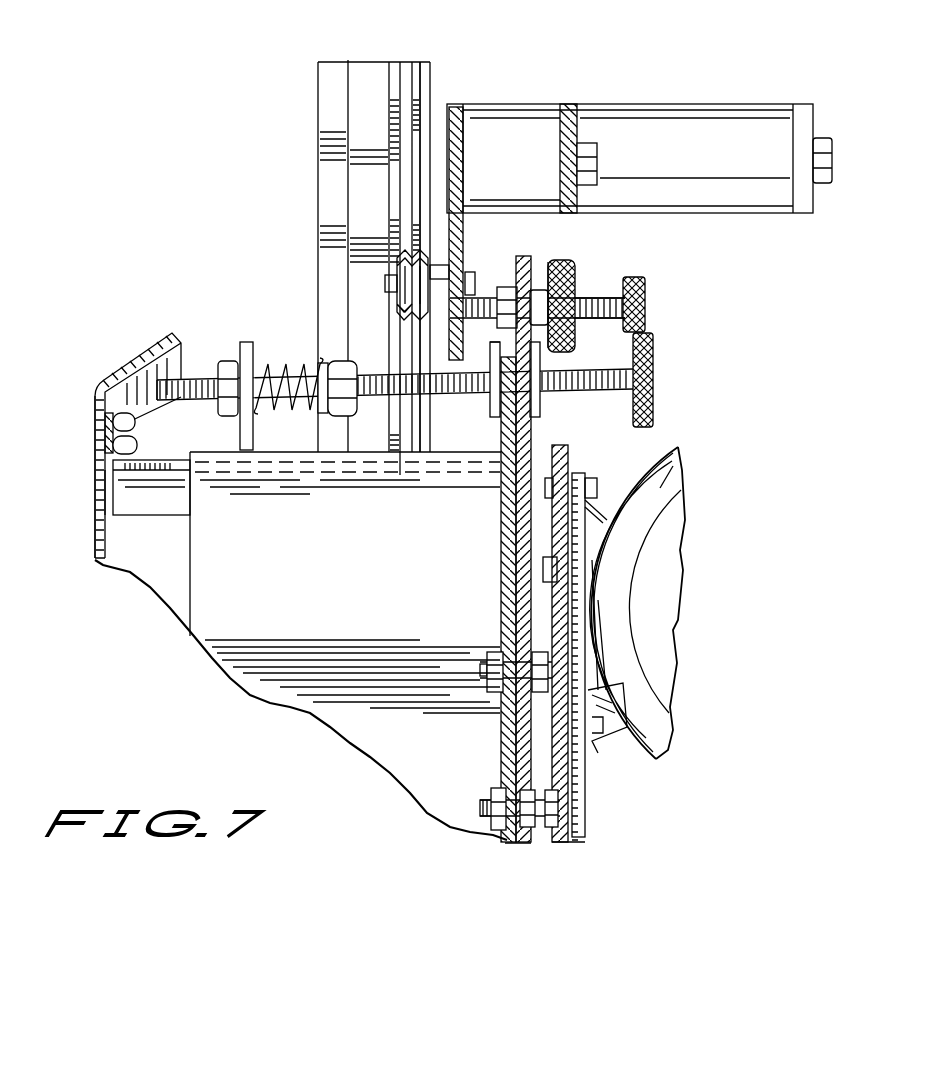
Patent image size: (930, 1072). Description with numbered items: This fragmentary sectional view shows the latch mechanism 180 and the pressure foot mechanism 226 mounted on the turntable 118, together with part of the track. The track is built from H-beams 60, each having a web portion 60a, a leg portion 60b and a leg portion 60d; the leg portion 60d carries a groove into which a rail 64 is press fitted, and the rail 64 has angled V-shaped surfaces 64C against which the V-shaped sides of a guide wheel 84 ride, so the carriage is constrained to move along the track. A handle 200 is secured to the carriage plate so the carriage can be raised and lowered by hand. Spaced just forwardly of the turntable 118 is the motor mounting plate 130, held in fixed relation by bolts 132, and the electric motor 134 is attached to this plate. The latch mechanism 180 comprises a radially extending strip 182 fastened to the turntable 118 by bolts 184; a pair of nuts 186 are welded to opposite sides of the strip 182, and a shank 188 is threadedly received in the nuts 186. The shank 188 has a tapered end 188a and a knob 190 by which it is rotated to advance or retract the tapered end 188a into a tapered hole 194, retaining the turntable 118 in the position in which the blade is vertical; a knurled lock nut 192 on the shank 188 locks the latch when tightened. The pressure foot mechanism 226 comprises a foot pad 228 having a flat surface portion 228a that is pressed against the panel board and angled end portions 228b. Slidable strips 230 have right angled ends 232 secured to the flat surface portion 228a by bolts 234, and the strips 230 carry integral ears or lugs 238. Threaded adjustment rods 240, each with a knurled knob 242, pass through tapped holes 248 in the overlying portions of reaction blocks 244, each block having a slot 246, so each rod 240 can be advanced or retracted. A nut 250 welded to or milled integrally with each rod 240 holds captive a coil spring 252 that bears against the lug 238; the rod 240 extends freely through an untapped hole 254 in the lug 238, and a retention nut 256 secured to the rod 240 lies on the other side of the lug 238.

The H-beam 60 is at (300, 108).
The web portion 60a is at (362, 97).
The leg portion 60b is at (333, 180).
The leg portion 60d is at (417, 210).
The angled V-shaped surfaces 64C is at (417, 87).
The guide wheel 84 is at (395, 262).
The handle 200 is at (700, 122).
The tapered end 188a is at (465, 298).
The tapered hole 194 is at (482, 294).
The nut 186 is at (560, 268).
The knurled lock nut 192 is at (577, 275).
The shank 188 is at (635, 280).
The latch mechanism 180 is at (668, 283).
The knob 190 is at (653, 318).
The knurled knob 242 is at (655, 372).
The reaction block 244 is at (540, 370).
The radially extending strip 182 is at (540, 440).
The slot 246 is at (503, 455).
The motor mounting plate 130 is at (570, 842).
The turntable 118 is at (507, 852).
The bolt 184 is at (487, 660).
The bolt 132 is at (480, 812).
The electric motor 134 is at (667, 488).
The rail 64 is at (411, 456).
The threaded adjustment rod 240 is at (378, 400).
The tapped hole 248 is at (495, 400).
The slidable strip 230 is at (167, 500).
The foot pad 228 is at (97, 538).
The flat surface portion 228a is at (100, 478).
The angled end portion 228b is at (130, 356).
The right angled end 232 is at (118, 413).
The bolt 234 is at (112, 452).
The pressure foot mechanism 226 is at (148, 330).
The retention nut 256 is at (228, 360).
The ear or lug 238 is at (248, 345).
The untapped hole 254 is at (235, 412).
The coil spring 252 is at (280, 408).
The nut 250 is at (340, 418).